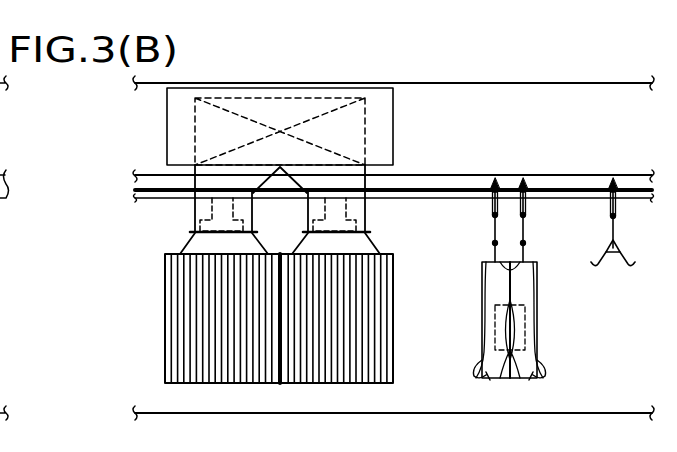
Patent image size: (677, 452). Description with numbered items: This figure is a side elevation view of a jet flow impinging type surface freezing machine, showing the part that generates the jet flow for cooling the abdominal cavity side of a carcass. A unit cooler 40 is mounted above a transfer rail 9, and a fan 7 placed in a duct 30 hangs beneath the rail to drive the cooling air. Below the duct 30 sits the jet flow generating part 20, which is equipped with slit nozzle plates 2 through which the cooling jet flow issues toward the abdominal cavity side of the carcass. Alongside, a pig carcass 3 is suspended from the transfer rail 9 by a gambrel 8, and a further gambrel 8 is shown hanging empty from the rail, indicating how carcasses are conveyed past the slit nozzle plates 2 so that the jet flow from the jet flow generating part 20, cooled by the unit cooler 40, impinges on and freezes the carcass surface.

The slit nozzle plates 2 is at (223, 373).
The pig carcass 3 is at (538, 327).
The fan 7 is at (216, 210).
The gambrel 8 is at (608, 248).
The transfer rail 9 is at (459, 198).
The jet flow generating part 20 is at (165, 311).
The duct 30 is at (193, 232).
The unit cooler 40 is at (290, 105).